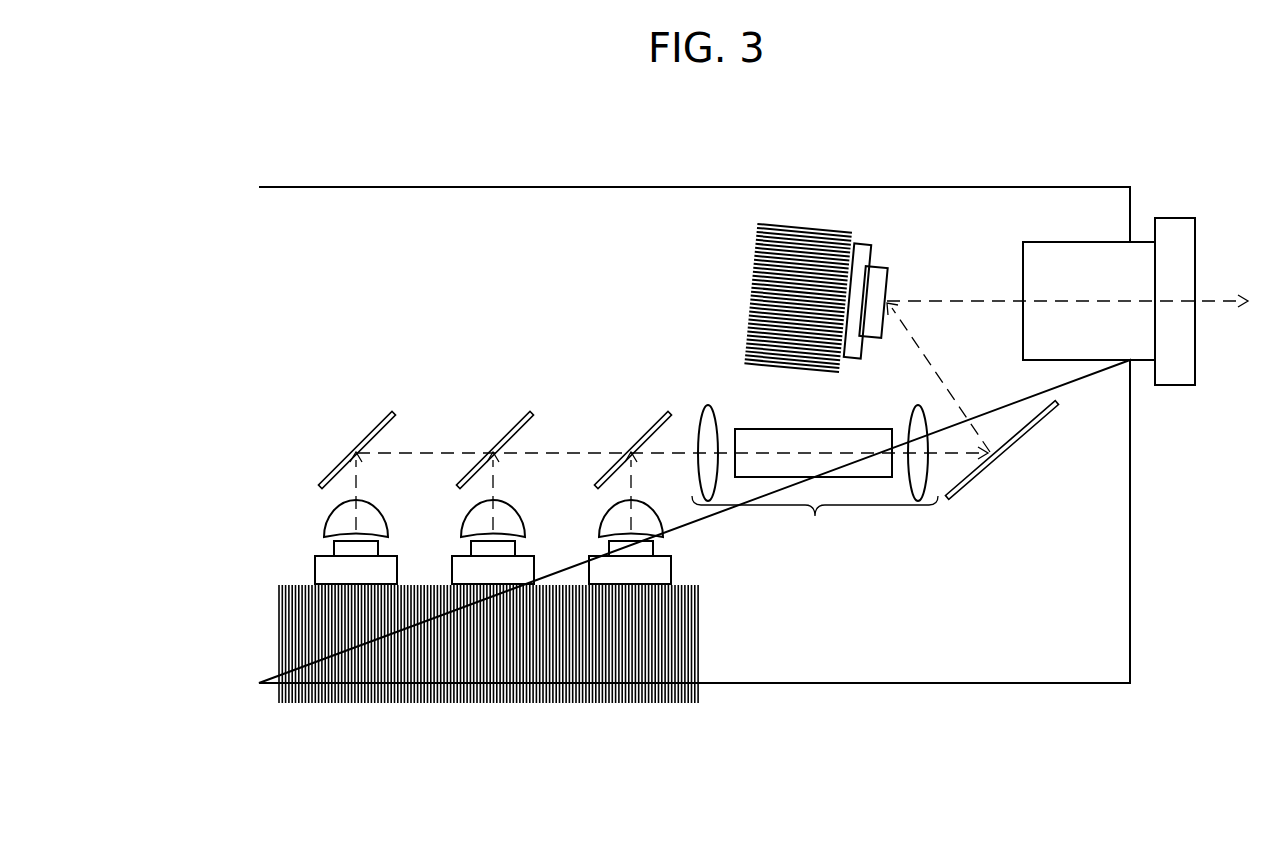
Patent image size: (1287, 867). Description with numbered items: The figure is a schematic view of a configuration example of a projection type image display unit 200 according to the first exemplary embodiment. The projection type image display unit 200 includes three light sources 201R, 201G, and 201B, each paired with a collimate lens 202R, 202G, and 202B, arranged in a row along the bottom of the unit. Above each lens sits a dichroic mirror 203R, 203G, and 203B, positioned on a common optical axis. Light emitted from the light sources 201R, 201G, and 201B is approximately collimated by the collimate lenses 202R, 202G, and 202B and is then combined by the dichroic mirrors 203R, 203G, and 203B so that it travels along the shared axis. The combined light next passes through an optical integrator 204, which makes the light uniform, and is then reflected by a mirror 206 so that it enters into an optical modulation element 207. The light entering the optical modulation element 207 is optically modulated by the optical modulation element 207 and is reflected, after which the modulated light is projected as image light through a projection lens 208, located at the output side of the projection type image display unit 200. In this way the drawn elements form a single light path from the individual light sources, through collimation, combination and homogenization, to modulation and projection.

The projection type image display unit 200 is at (260, 417).
The light source 201B is at (313, 563).
The light source 201G is at (534, 565).
The light source 201R is at (672, 567).
The collimate lens 202B is at (325, 535).
The collimate lens 202G is at (462, 535).
The collimate lens 202R is at (662, 535).
The dichroic mirror 203B is at (350, 452).
The dichroic mirror 203G is at (507, 432).
The dichroic mirror 203R is at (643, 430).
The optical integrator 204 is at (815, 481).
The mirror 206 is at (1005, 460).
The optical modulation element 207 is at (877, 267).
The projection lens 208 is at (1080, 247).